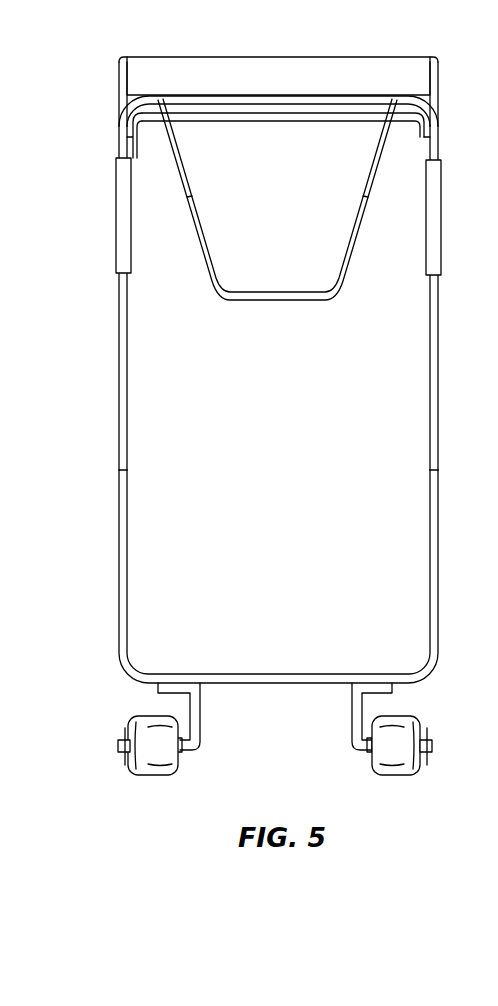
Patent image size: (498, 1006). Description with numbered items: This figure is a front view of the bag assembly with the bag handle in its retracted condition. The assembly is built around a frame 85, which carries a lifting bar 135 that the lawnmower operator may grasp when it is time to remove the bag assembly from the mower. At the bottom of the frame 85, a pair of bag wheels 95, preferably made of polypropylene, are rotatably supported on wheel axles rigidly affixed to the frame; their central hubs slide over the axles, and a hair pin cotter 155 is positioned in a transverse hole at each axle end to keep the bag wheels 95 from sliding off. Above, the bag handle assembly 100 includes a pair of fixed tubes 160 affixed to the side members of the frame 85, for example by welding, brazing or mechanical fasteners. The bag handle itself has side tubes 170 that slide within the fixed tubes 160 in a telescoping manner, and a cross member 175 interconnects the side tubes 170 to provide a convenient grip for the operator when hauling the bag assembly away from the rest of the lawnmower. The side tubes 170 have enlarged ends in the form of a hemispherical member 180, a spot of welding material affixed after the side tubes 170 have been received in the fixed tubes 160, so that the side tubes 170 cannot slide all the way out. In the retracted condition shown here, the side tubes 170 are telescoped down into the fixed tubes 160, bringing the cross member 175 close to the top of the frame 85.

The bag handle assembly 100 is at (92, 78).
The frame 85 is at (99, 456).
The cross member 175 is at (218, 54).
The fixed tubes 160 is at (116, 261).
The lifting bar 135 is at (248, 300).
The side tubes 170 is at (128, 382).
The hemispherical member 180 is at (128, 469).
The hair pin cotter 155 is at (127, 724).
The bag wheels 95 is at (150, 777).